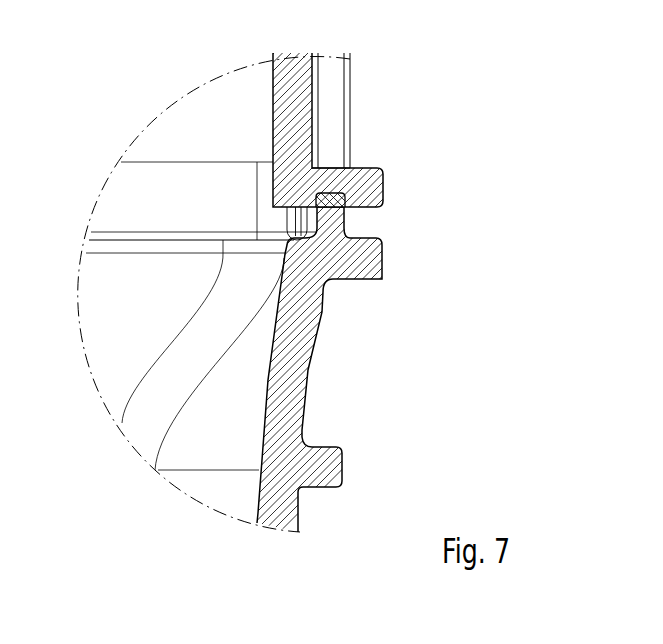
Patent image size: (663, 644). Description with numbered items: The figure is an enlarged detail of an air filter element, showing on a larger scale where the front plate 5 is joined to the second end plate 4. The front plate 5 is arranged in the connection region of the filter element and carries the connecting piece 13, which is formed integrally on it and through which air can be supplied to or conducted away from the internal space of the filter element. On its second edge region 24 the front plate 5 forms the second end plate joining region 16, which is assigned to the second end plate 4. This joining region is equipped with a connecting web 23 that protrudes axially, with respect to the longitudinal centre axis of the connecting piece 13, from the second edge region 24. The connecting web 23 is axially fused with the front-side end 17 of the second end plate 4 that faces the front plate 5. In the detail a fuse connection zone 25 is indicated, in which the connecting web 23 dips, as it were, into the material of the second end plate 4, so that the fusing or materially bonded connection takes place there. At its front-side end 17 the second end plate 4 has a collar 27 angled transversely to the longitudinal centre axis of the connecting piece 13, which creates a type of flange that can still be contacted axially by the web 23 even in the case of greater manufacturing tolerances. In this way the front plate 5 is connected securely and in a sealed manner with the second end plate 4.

The second end plate 4 is at (358, 85).
The front plate 5 is at (326, 312).
The connecting piece 13 is at (333, 473).
The second end plate joining region 16 is at (372, 265).
The front-side end 17 is at (363, 175).
The connecting web 23 is at (340, 222).
The second edge region 24 is at (375, 248).
The fuse connection zone 25 is at (328, 196).
The collar 27 is at (373, 187).